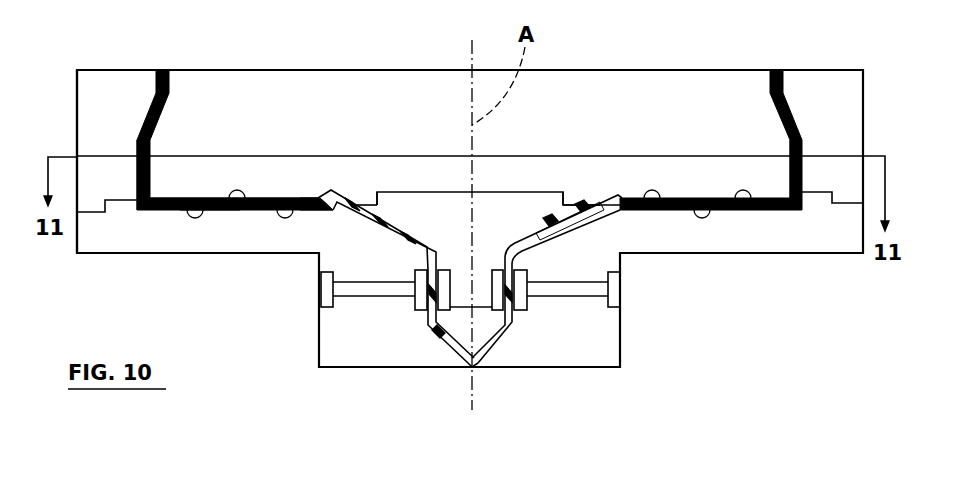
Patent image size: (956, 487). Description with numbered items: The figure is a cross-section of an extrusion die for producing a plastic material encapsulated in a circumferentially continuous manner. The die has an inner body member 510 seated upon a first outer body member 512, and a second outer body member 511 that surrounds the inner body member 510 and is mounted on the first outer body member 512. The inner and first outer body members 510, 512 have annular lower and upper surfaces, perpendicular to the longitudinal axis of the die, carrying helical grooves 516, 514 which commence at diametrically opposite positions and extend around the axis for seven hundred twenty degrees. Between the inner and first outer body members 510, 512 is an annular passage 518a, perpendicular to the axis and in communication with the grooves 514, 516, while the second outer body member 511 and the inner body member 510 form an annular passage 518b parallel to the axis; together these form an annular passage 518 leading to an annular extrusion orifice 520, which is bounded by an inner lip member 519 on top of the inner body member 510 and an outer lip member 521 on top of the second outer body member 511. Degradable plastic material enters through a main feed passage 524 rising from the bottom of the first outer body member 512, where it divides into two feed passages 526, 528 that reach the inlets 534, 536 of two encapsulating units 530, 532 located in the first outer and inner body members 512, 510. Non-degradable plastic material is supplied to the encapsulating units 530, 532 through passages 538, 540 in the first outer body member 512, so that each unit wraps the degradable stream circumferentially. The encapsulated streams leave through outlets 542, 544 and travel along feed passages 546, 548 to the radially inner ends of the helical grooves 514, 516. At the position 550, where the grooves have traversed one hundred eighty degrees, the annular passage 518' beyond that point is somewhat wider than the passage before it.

The inner body member 510 is at (350, 160).
The second outer body member 511 is at (98, 190).
The first outer body member 512 is at (213, 247).
The helical groove 514 is at (195, 222).
The helical groove 516 is at (645, 187).
The annular passage 518 is at (838, 105).
The annular passage 518a is at (208, 213).
The annular passage 518b is at (135, 173).
The annular passage 518' is at (235, 143).
The inner lip member 519 is at (385, 84).
The annular extrusion orifice 520 is at (780, 70).
The outer lip member 521 is at (128, 97).
The main feed passage 524 is at (450, 372).
The feed passage 526 is at (447, 340).
The feed passage 528 is at (487, 337).
The encapsulating unit 530 is at (415, 275).
The encapsulating unit 532 is at (537, 267).
The inlet 534 is at (423, 317).
The inlet 536 is at (535, 312).
The passage 538 is at (352, 293).
The passage 540 is at (594, 293).
The outlet 542 is at (443, 265).
The outlet 544 is at (498, 265).
The feed passage 546 is at (362, 225).
The feed passage 548 is at (578, 225).
The position 550 is at (222, 215).